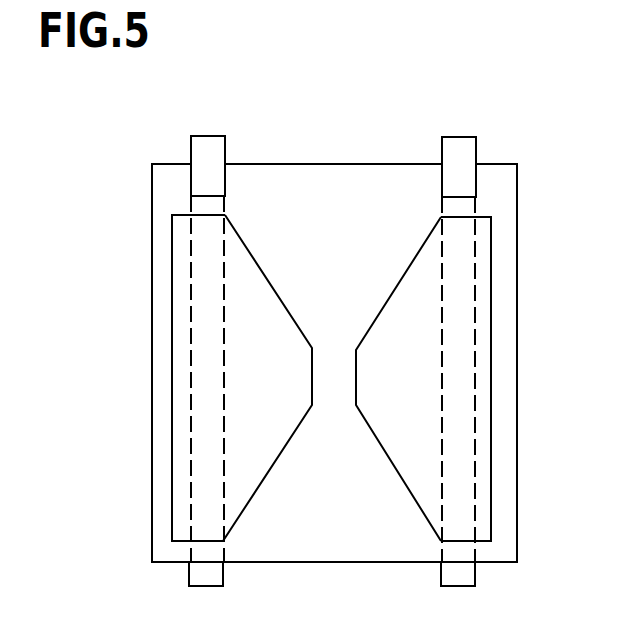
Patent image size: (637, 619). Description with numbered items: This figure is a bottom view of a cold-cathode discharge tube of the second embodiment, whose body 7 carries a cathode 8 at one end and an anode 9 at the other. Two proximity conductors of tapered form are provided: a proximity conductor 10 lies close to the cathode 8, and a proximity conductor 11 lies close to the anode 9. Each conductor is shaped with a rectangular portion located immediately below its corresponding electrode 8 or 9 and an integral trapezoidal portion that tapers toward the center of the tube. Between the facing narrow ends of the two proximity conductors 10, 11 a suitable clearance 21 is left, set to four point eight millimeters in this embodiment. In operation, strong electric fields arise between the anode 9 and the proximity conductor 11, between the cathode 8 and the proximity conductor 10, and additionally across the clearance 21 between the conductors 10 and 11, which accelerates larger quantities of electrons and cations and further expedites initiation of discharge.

The substrate 7 is at (318, 163).
The cathode 8 is at (225, 136).
The anode 9 is at (470, 136).
The proximity conductor 10 is at (265, 450).
The proximity conductor 11 is at (385, 440).
The clearance 21 is at (338, 355).